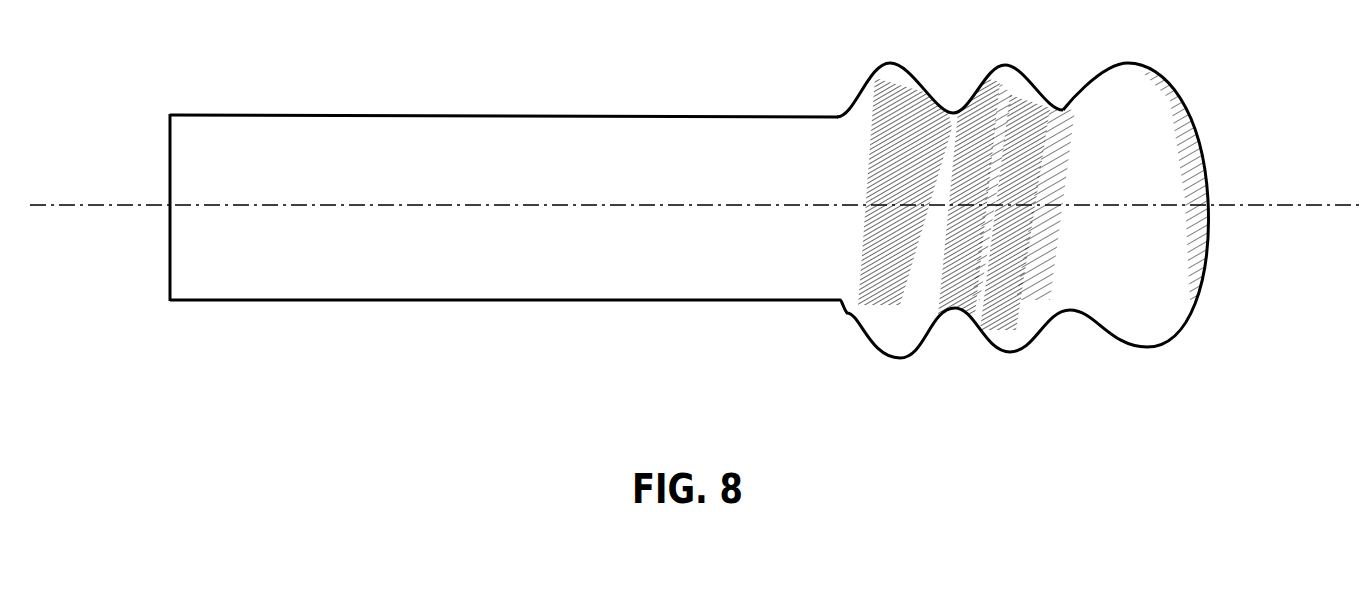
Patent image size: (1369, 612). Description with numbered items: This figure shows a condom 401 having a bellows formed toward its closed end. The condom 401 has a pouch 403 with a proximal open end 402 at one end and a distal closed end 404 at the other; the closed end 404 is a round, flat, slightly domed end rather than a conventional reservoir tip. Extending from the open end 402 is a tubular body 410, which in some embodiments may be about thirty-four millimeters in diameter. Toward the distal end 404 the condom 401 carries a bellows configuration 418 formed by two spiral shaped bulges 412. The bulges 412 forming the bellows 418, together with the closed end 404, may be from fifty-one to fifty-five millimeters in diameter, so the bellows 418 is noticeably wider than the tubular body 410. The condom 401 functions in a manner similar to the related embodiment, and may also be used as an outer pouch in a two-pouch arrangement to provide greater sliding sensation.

The condom 401 is at (744, 58).
The proximal open end 402 is at (170, 160).
The pouch 403 is at (725, 115).
The distal closed end 404 is at (1203, 135).
The tubular body 410 is at (525, 112).
The spiral shaped bulges 412 is at (891, 62).
The bellows configuration 418 is at (1086, 57).